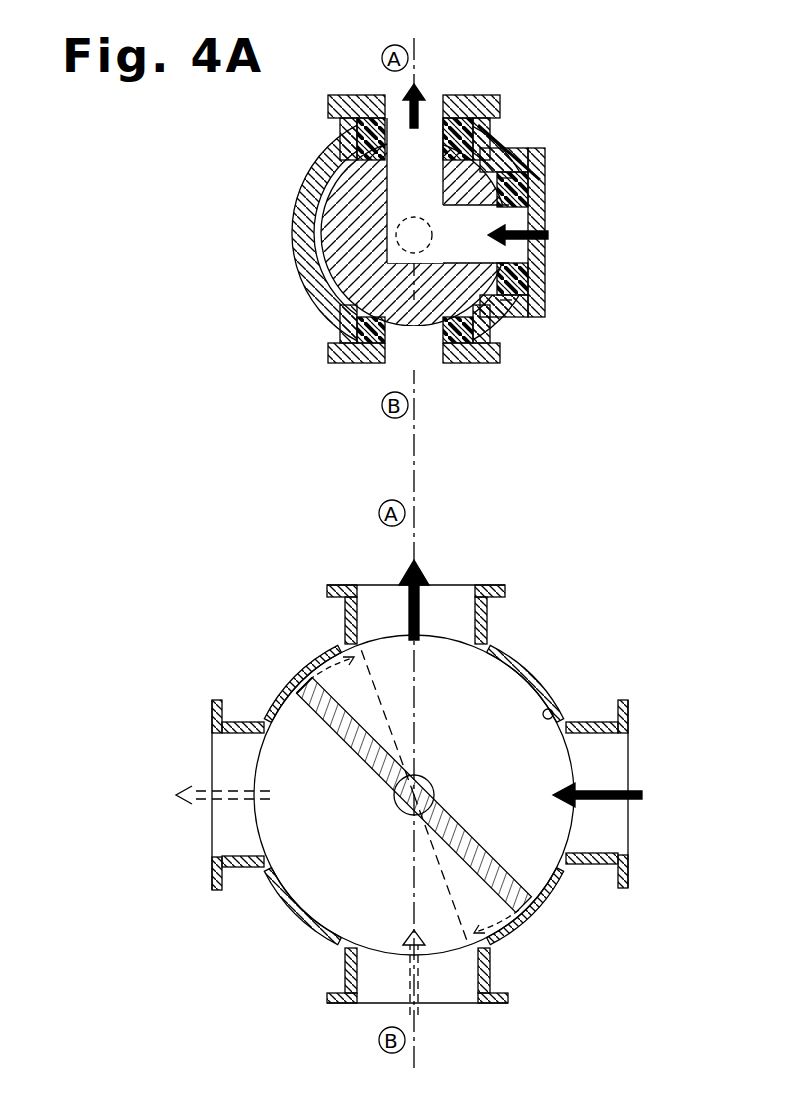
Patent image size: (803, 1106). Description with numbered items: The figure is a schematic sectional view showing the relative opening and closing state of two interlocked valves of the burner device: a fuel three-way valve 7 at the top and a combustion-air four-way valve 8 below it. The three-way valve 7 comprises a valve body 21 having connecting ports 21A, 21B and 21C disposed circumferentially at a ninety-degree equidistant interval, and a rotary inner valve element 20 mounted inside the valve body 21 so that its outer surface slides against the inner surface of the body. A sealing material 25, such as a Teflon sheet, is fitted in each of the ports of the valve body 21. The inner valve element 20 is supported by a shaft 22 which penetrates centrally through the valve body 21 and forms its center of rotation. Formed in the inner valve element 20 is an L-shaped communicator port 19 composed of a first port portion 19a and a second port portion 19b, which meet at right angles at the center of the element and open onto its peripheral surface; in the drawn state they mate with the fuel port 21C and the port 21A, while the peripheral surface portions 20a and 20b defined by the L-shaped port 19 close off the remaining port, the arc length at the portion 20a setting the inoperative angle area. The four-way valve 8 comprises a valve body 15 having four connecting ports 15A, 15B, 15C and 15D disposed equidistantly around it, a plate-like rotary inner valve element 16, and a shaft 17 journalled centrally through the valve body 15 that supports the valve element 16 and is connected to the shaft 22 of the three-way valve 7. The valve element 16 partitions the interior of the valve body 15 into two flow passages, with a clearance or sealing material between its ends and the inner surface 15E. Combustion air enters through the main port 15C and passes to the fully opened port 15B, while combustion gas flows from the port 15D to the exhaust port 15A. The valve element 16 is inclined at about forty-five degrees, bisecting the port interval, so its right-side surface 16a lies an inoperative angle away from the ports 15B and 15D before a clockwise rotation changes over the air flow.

The three-way valve 7 is at (218, 297).
The four-way valve 8 is at (270, 596).
The valve body 15 is at (535, 672).
The connecting port 15A is at (240, 745).
The connecting port 15B is at (455, 600).
The connecting port 15C is at (590, 766).
The connecting port 15D is at (438, 998).
The inner surface 15E is at (555, 712).
The rotary inner valve element 16 is at (500, 928).
The right-side surface 16a is at (462, 826).
The shaft 17 is at (405, 808).
The L-shaped communicator port 19 is at (400, 190).
The first port portion 19a is at (505, 178).
The second port portion 19b is at (503, 300).
The rotary inner valve element 20 is at (404, 247).
The peripheral surface portion 20a is at (490, 222).
The peripheral surface portion 20b is at (345, 265).
The valve body 21 is at (496, 140).
The connecting port 21A is at (430, 123).
The connecting port 21B is at (433, 345).
The connecting port 21C is at (520, 250).
The shaft 22 is at (400, 265).
The sealing material 25 is at (360, 130).